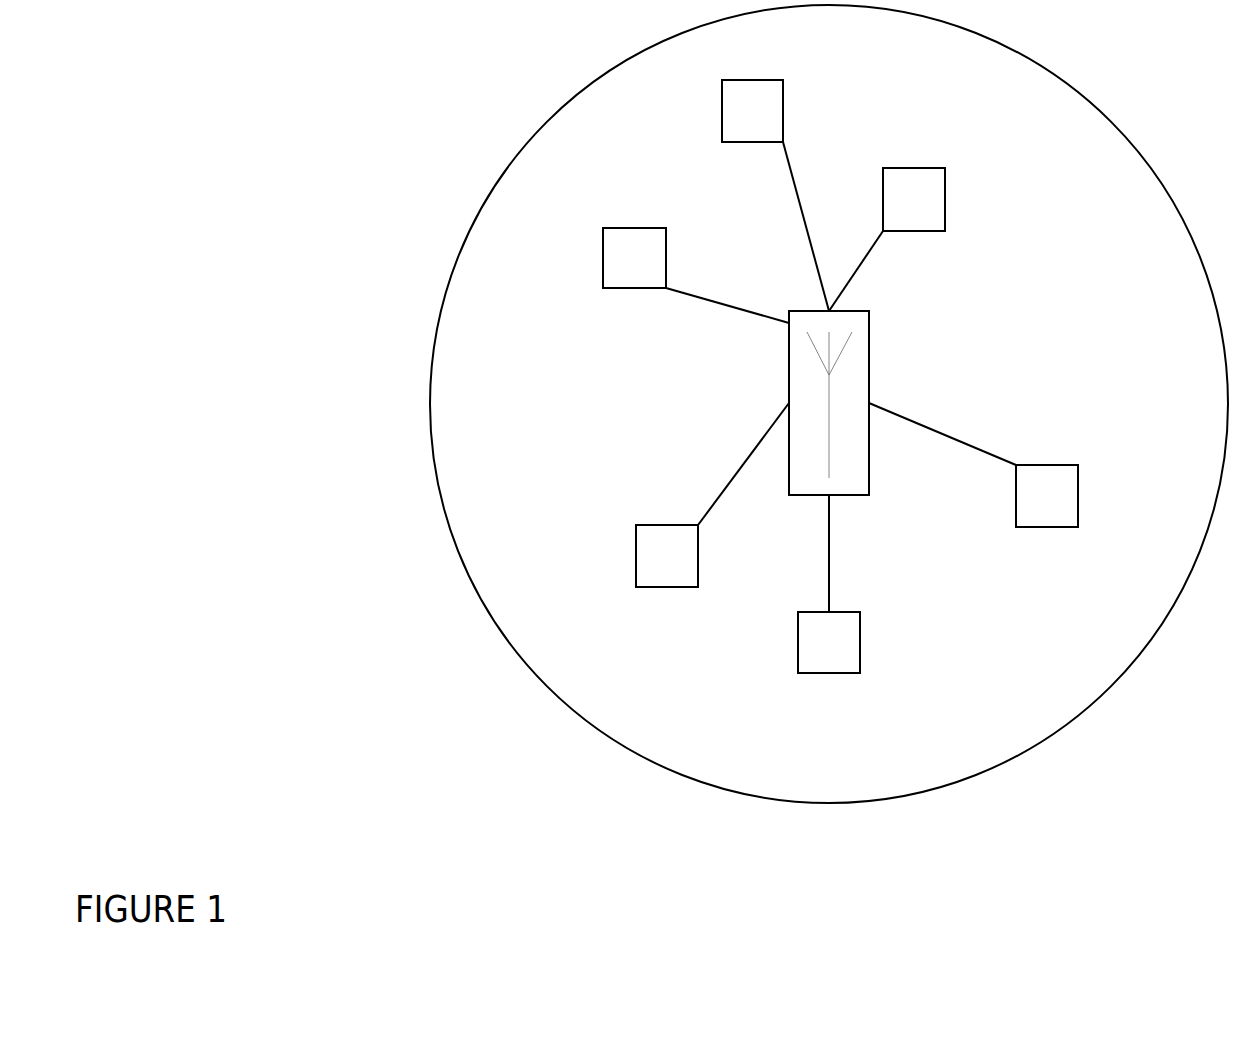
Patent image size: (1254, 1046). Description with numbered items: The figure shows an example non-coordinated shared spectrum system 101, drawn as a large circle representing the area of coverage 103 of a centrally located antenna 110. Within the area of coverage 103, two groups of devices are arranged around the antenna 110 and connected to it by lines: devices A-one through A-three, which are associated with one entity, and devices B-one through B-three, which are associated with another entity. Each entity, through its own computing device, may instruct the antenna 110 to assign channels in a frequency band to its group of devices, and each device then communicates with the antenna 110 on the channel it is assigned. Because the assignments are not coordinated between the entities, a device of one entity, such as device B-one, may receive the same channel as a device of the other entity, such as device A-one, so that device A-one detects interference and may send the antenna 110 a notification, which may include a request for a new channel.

The non-coordinated shared spectrum system 101 is at (500, 118).
The area of coverage 103 is at (437, 322).
The antenna 110 is at (789, 368).